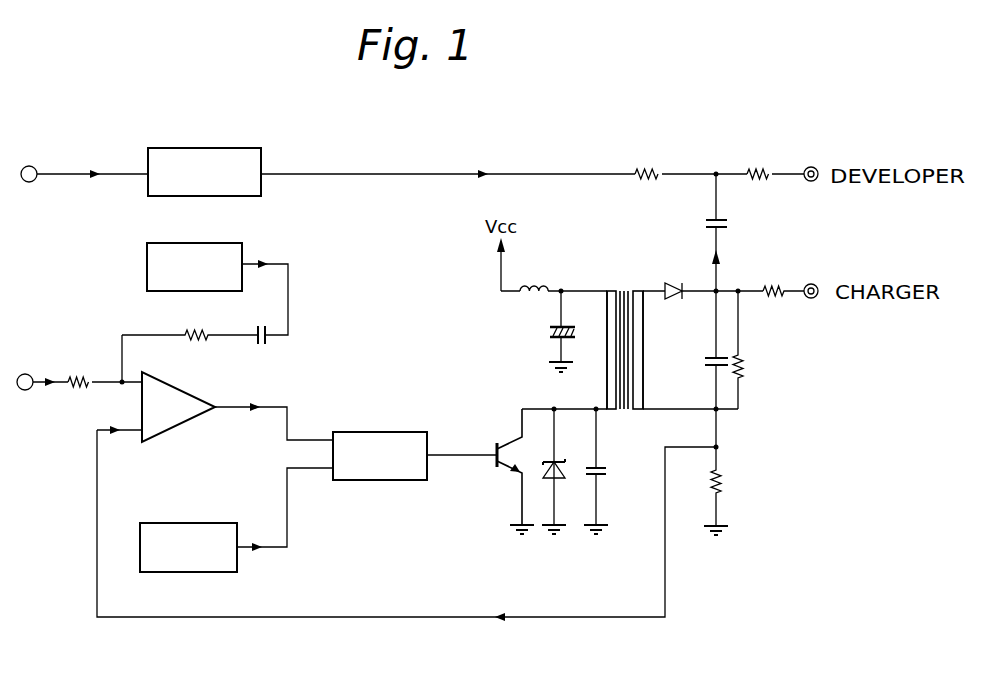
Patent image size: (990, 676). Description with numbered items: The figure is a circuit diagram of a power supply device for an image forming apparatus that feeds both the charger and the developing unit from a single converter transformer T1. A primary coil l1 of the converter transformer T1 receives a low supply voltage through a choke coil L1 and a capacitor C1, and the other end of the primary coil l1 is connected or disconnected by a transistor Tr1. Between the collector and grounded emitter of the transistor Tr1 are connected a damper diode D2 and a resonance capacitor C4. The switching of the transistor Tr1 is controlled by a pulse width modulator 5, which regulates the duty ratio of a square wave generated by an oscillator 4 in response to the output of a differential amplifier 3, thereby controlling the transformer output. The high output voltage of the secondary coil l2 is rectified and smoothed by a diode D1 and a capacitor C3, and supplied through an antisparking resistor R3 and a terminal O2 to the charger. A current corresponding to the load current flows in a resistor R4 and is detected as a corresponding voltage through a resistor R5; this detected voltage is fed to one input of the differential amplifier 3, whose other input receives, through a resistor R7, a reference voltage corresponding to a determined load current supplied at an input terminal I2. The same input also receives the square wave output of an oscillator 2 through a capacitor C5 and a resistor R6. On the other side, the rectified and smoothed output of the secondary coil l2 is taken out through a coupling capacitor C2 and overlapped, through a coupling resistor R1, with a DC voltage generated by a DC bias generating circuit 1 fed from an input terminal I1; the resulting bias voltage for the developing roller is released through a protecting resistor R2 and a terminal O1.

The DC bias generating circuit 1 is at (210, 148).
The oscillator 2 is at (206, 243).
The differential amplifier 3 is at (193, 396).
The oscillator 4 is at (197, 523).
The pulse width modulator 5 is at (386, 432).
The input terminal I1 is at (30, 165).
The input terminal I2 is at (28, 373).
The terminal O1 is at (818, 168).
The terminal O2 is at (817, 284).
The coupling resistor R1 is at (645, 171).
The protecting resistor R2 is at (749, 171).
The antisparking resistor R3 is at (765, 285).
The resistor R4 is at (745, 370).
The resistor R5 is at (722, 488).
The resistor R6 is at (191, 330).
The resistor R7 is at (80, 387).
The capacitor C1 is at (548, 333).
The coupling capacitor C2 is at (732, 226).
The capacitor C3 is at (706, 366).
The resonance capacitor C4 is at (607, 470).
The capacitor C5 is at (261, 325).
The diode D1 is at (670, 285).
The damper diode D2 is at (566, 462).
The choke coil L1 is at (540, 288).
The converter transformer T1 is at (625, 291).
The transistor Tr1 is at (510, 470).
The primary coil l1 is at (607, 375).
The secondary coil l2 is at (643, 351).